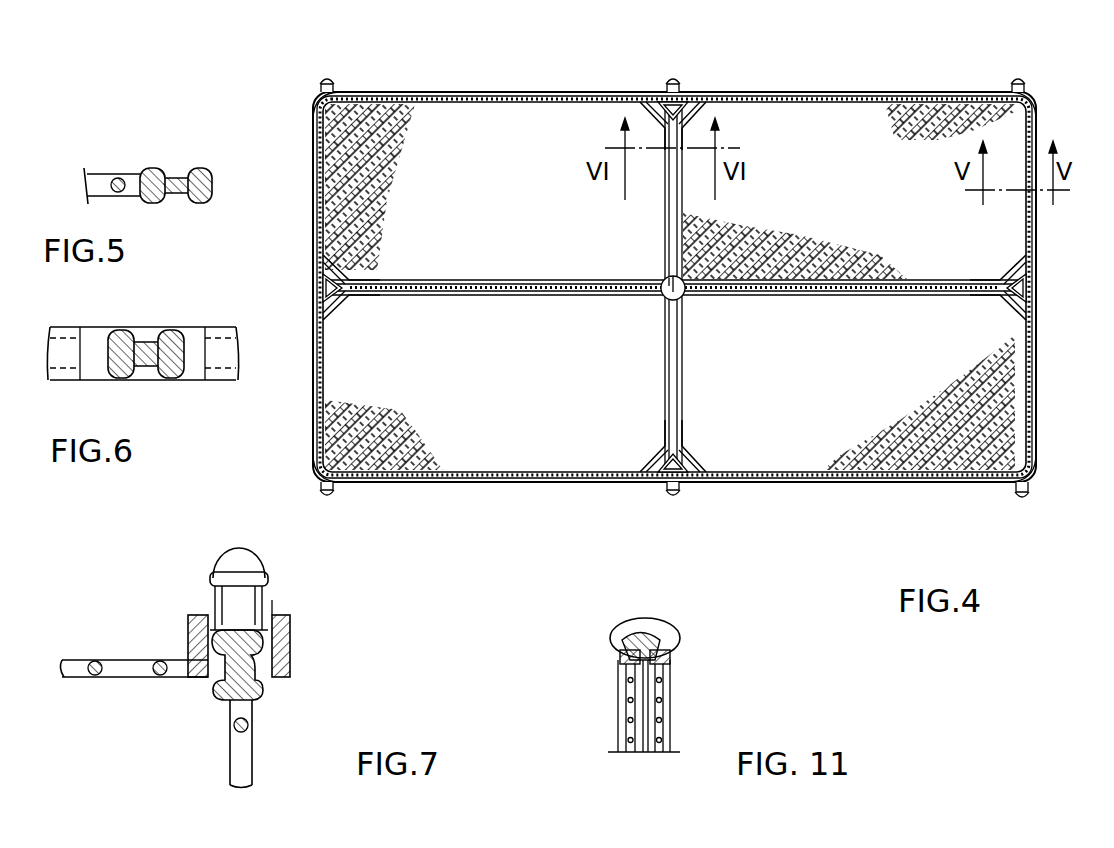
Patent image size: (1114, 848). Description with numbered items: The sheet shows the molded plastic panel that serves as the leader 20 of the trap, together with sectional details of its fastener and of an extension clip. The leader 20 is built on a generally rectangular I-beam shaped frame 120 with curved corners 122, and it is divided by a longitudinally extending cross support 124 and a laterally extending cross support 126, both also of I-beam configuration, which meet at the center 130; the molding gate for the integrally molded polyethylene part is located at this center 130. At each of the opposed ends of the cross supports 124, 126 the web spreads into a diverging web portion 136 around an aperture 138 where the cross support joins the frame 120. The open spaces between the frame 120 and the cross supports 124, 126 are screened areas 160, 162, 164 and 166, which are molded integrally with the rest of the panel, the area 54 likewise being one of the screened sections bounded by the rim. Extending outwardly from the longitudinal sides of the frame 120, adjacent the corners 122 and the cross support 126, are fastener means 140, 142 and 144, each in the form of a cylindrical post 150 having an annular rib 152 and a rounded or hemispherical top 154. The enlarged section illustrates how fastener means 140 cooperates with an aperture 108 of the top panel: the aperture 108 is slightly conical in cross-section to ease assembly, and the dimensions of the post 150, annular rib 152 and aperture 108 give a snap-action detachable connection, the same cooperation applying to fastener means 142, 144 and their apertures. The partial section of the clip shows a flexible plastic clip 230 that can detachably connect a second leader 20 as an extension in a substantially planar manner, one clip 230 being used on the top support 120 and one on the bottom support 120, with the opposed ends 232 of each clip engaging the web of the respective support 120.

In FIG. 7, the leader 20 is at (188, 640).
In FIG. 11, the leader 20 is at (618, 712).
In FIG. 7, the screened area 54 is at (115, 660).
In FIG. 7, the aperture 108 is at (272, 605).
In FIG. 4, the frame 120 is at (870, 95).
In FIG. 5, the frame 120 is at (195, 170).
In FIG. 6, the frame 120 is at (218, 328).
In FIG. 7, the frame 120 is at (215, 698).
In FIG. 11, the frame 120 is at (656, 635).
In FIG. 4, the curved corners 122 is at (313, 108).
In FIG. 4, the cross support 124 is at (665, 160).
In FIG. 6, the cross support 124 is at (170, 328).
In FIG. 4, the cross support 126 is at (385, 296).
In FIG. 4, the center 130 is at (665, 296).
In FIG. 4, the diverging web portion 136 is at (705, 100).
In FIG. 4, the aperture 138 is at (668, 100).
In FIG. 4, the fastener means 140 is at (323, 84).
In FIG. 7, the fastener means 140 is at (200, 562).
In FIG. 4, the fastener means 142 is at (676, 82).
In FIG. 4, the fastener means 144 is at (1020, 82).
In FIG. 7, the cylindrical post 150 is at (228, 608).
In FIG. 7, the annular rib 152 is at (258, 580).
In FIG. 7, the rounded top 154 is at (235, 555).
In FIG. 4, the screened area 160 is at (385, 105).
In FIG. 7, the screened area 160 is at (252, 748).
In FIG. 4, the screened area 162 is at (428, 468).
In FIG. 4, the screened area 164 is at (910, 104).
In FIG. 4, the screened area 166 is at (910, 470).
In FIG. 11, the flexible plastic clip 230 is at (665, 628).
In FIG. 11, the opposed ends 232 is at (620, 658).